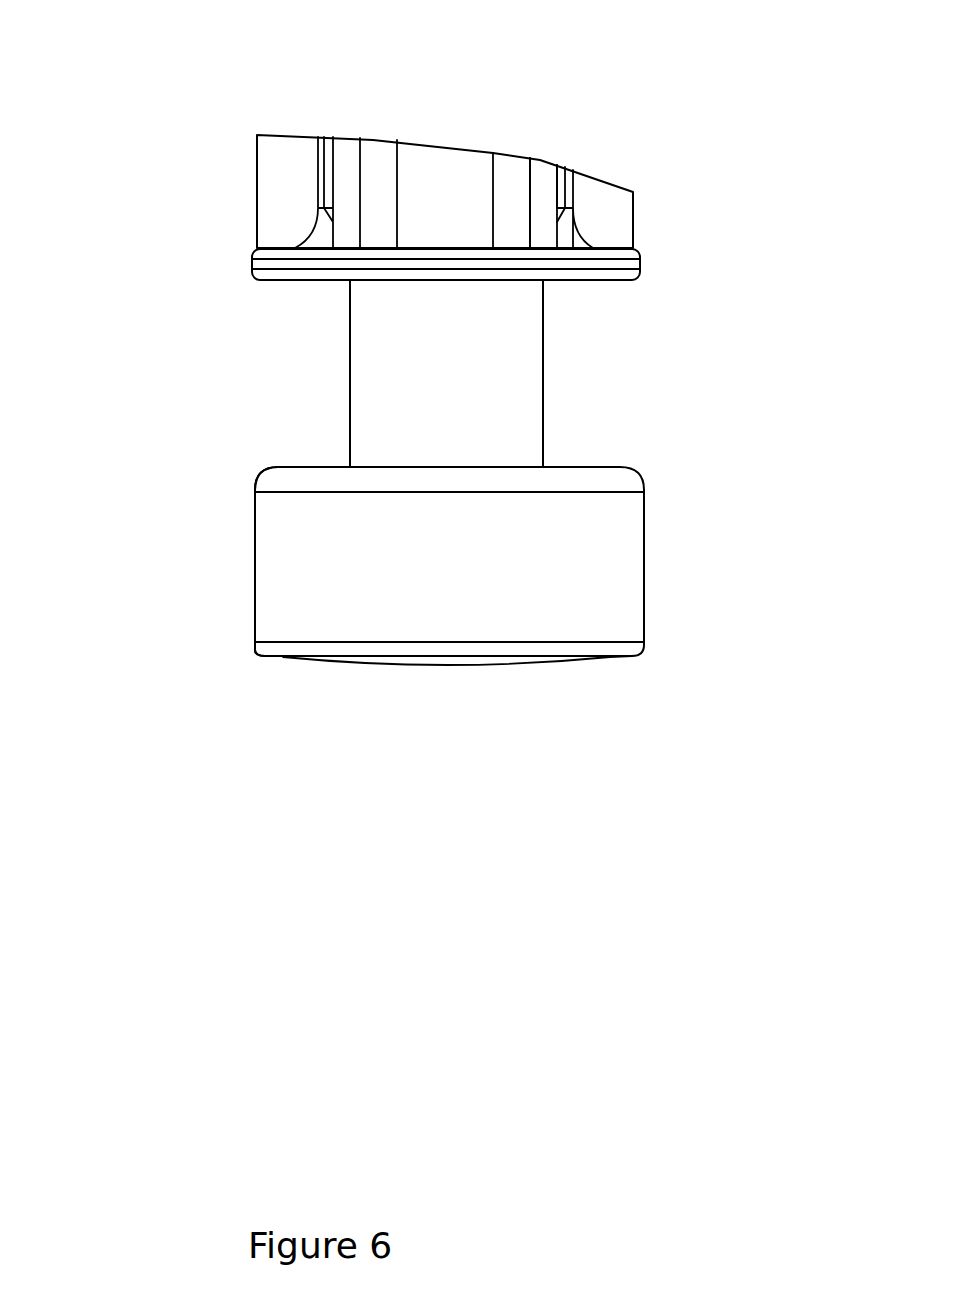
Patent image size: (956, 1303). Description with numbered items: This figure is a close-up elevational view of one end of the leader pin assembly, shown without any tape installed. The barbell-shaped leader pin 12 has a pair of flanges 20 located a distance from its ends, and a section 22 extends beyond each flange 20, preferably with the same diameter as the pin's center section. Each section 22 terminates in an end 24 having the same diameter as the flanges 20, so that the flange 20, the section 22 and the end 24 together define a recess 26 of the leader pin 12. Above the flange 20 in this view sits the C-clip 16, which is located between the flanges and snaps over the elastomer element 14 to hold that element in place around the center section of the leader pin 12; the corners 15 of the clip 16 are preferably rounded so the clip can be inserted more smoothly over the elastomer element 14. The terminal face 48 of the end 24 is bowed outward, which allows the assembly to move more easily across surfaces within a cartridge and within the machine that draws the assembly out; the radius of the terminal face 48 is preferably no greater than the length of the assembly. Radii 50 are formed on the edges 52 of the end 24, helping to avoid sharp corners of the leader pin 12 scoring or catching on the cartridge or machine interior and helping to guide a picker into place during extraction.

The leader pin 12 is at (613, 657).
The elastomer element 14 is at (542, 230).
The corners of clip 15 is at (323, 227).
The C-clip 16 is at (622, 205).
The flanges 20 is at (642, 262).
The sections 22 is at (545, 410).
The end 24 is at (608, 557).
The recesses 26 is at (303, 367).
The terminal face 48 is at (355, 658).
The radii 50 is at (260, 657).
The edges 52 is at (268, 472).